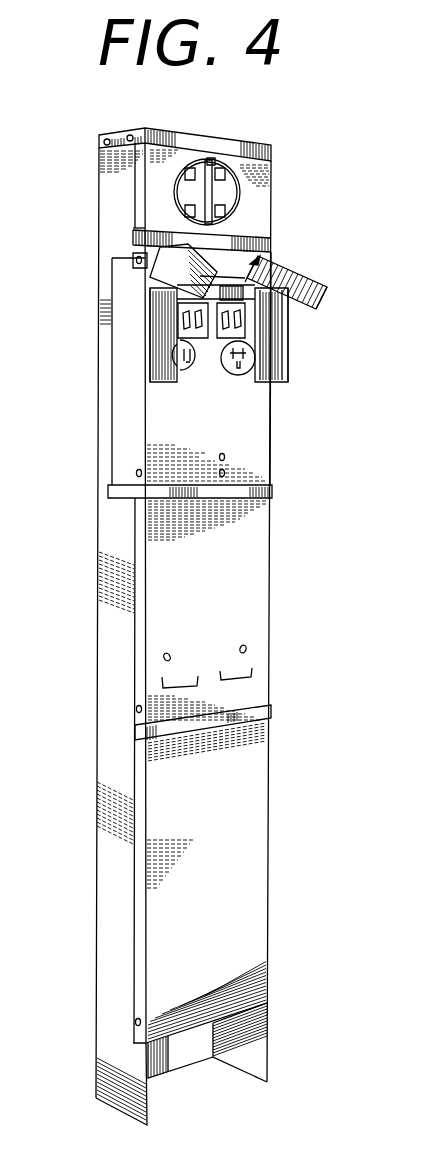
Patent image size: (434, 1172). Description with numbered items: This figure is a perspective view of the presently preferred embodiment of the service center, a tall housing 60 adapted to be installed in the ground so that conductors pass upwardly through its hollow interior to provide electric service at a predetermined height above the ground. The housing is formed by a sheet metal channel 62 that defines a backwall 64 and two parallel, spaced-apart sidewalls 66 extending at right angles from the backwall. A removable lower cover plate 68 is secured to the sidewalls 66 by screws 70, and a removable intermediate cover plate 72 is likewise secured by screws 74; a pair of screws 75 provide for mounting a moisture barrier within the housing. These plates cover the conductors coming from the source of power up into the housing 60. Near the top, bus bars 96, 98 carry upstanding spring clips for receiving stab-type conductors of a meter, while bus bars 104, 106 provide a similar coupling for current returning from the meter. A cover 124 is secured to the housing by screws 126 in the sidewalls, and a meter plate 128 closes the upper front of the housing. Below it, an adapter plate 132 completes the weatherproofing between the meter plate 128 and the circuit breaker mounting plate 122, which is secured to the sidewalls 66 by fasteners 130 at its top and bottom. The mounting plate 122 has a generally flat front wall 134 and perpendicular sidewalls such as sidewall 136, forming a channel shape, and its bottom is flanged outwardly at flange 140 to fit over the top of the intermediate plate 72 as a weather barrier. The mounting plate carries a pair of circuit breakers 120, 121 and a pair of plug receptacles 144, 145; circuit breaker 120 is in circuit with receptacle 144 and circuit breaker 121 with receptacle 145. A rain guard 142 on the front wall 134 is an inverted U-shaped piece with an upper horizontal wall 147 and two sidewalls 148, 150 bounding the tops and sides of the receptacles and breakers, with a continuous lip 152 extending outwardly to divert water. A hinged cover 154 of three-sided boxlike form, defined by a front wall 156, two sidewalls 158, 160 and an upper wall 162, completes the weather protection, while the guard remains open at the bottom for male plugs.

The housing 60 is at (270, 628).
The sheet metal channel 62 is at (115, 597).
The backwall 64 is at (170, 1057).
The sidewalls 66 is at (270, 1045).
The lower cover plate 68 is at (264, 845).
The screws 70 is at (135, 1022).
The intermediate cover plate 72 is at (252, 578).
The screws 74 is at (137, 710).
The screws 75 is at (240, 648).
The bus bar 96 is at (186, 155).
The bus bar 98 is at (237, 163).
The bus bar 104 is at (188, 209).
The bus bar 106 is at (223, 210).
The circuit breaker 120 is at (187, 325).
The circuit breaker 121 is at (252, 352).
The circuit breaker mounting plate 122 is at (258, 402).
The cover 124 is at (164, 130).
The screws 126 is at (100, 143).
The meter plate 128 is at (253, 229).
The fasteners 130 is at (135, 263).
The adapter plate 132 is at (133, 243).
The front wall 134 is at (257, 447).
The sidewall 136 is at (118, 438).
The flange 140 is at (273, 489).
The rain guard 142 is at (300, 241).
The plug receptacle 144 is at (187, 395).
The plug receptacle 145 is at (284, 374).
The upper horizontal wall 147 is at (133, 233).
The sidewall 148 is at (157, 337).
The sidewall 150 is at (284, 352).
The continuous lip 152 is at (195, 372).
The hinged cover 154 is at (303, 272).
The front wall 156 is at (258, 260).
The sidewall 158 is at (163, 268).
The sidewall 160 is at (318, 297).
The upper wall 162 is at (245, 302).